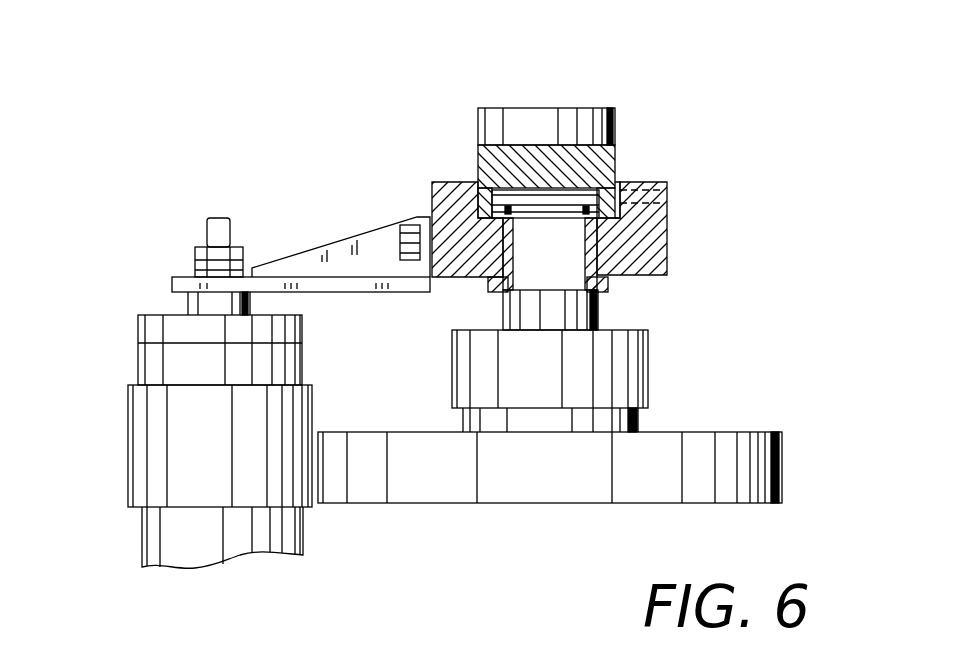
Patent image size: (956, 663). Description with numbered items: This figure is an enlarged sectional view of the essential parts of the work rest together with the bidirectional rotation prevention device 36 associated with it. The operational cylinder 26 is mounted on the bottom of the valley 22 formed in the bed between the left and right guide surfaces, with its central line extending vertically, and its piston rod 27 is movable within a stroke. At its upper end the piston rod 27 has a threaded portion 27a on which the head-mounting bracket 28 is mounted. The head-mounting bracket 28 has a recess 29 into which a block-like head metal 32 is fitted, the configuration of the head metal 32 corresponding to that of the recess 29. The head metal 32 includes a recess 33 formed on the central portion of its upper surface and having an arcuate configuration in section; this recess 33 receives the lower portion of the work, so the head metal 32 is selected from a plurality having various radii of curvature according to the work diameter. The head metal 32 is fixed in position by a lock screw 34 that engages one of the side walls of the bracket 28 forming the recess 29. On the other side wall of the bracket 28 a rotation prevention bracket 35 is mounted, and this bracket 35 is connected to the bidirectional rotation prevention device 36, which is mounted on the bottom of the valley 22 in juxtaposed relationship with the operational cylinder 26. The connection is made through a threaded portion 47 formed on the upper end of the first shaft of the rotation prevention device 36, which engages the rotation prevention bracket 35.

The valley 22 is at (748, 452).
The operational cylinder 26 is at (635, 377).
The piston rod 27 is at (587, 308).
The threaded portion 27a is at (597, 253).
The head-mounting bracket 28 is at (445, 203).
The recess 29 is at (483, 181).
The head metal 32 is at (478, 117).
The recess 33 is at (560, 145).
The lock screw 34 is at (617, 202).
The rotation prevention bracket 35 is at (312, 245).
The bidirectional rotation prevention device 36 is at (137, 358).
The threaded portion 47 is at (217, 233).